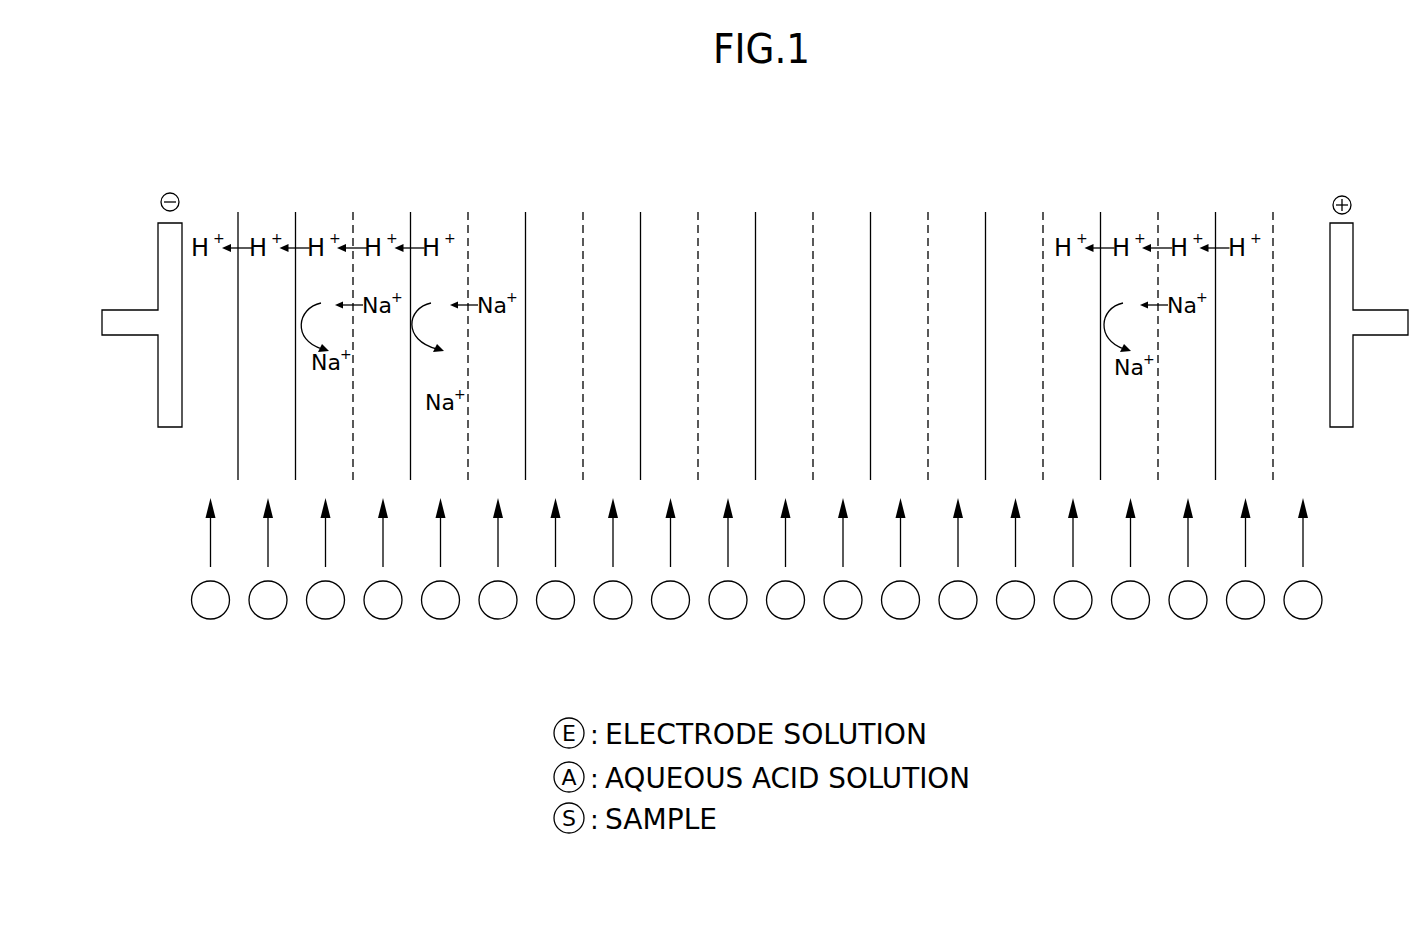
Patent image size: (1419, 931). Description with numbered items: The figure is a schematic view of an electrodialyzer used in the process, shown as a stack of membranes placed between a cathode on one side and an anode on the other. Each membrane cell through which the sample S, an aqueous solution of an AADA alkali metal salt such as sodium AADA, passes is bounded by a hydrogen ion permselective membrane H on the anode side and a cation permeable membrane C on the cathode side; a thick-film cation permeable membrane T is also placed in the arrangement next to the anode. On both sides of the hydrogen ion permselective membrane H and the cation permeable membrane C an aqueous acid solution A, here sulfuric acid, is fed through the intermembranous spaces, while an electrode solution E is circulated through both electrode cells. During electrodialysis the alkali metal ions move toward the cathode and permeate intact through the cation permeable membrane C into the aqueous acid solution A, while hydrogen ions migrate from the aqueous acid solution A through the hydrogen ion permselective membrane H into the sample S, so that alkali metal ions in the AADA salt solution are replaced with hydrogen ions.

The hydrogen ion permselective membrane H is at (727, 332).
The cation permeable membrane C is at (755, 332).
The thick-film cation permeable membrane T is at (1272, 332).
The electrode solution E is at (757, 558).
The aqueous acid solution A is at (757, 558).
The sample S is at (785, 558).